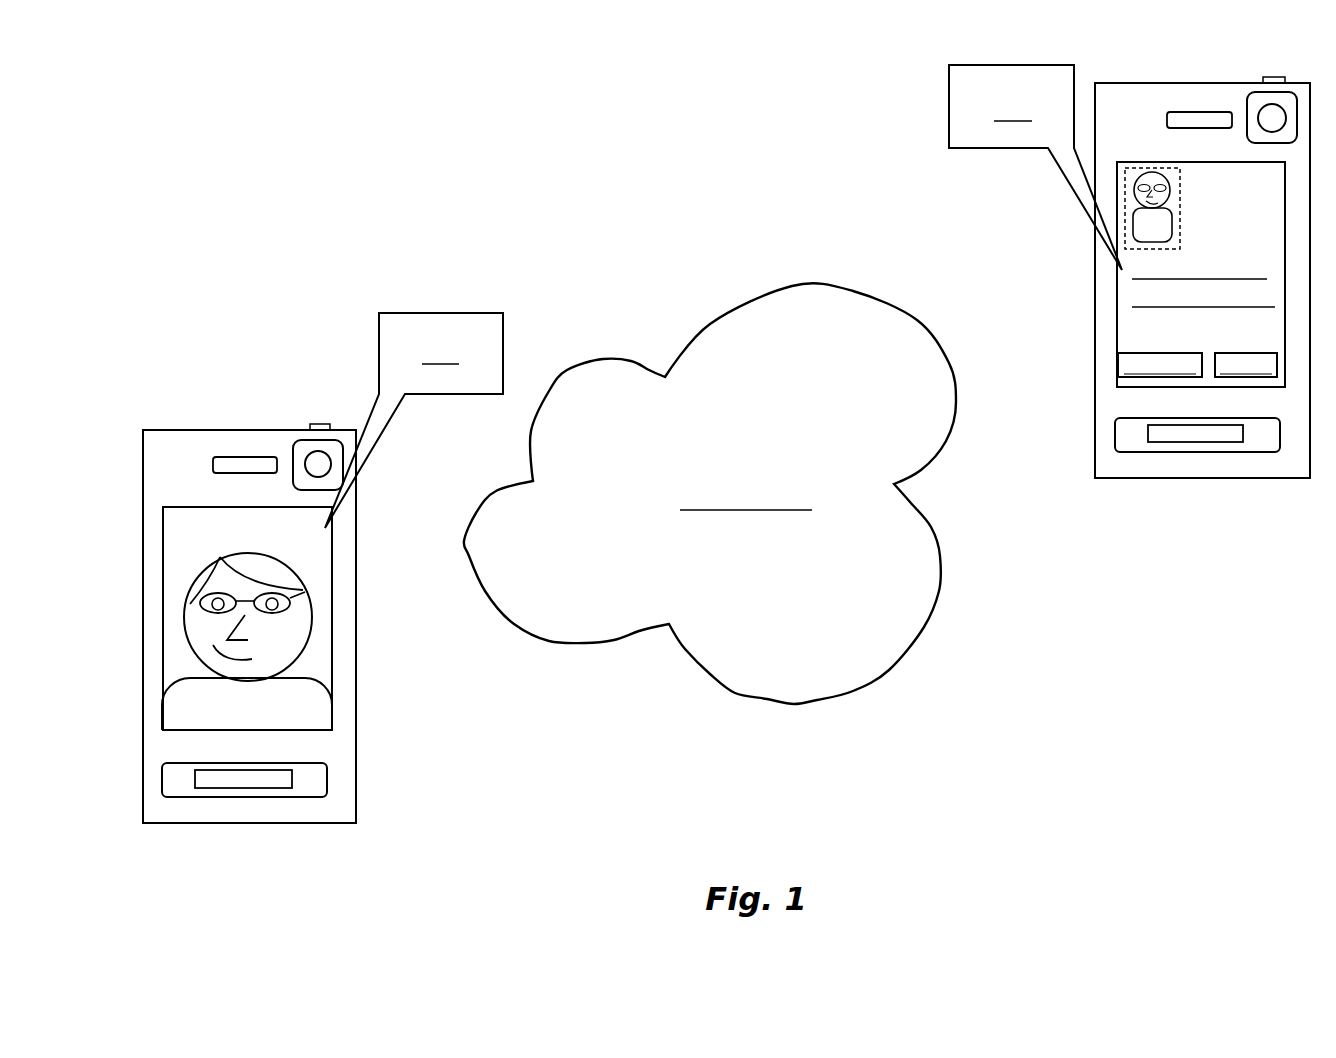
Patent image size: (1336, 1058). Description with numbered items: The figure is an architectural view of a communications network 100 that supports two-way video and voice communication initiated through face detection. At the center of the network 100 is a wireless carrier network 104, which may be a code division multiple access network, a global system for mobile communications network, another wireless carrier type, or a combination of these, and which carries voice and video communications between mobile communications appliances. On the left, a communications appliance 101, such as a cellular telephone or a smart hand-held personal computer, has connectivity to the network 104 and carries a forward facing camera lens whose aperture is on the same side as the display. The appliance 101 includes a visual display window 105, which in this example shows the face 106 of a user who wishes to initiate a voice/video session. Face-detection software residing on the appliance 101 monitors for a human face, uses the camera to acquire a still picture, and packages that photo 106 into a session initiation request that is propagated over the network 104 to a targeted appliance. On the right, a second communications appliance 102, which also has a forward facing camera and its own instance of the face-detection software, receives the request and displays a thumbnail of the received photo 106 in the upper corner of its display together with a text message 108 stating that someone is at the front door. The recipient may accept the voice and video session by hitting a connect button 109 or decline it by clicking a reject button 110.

The communications network 100 is at (670, 228).
The communications appliance 101 is at (357, 655).
The second communications appliance 102 is at (1096, 373).
The wireless carrier network 104 is at (937, 542).
The visual display window 105 is at (143, 555).
The face 106 is at (318, 618).
The text message 108 is at (1195, 248).
The connect button 109 is at (1185, 352).
The reject button 110 is at (1267, 352).